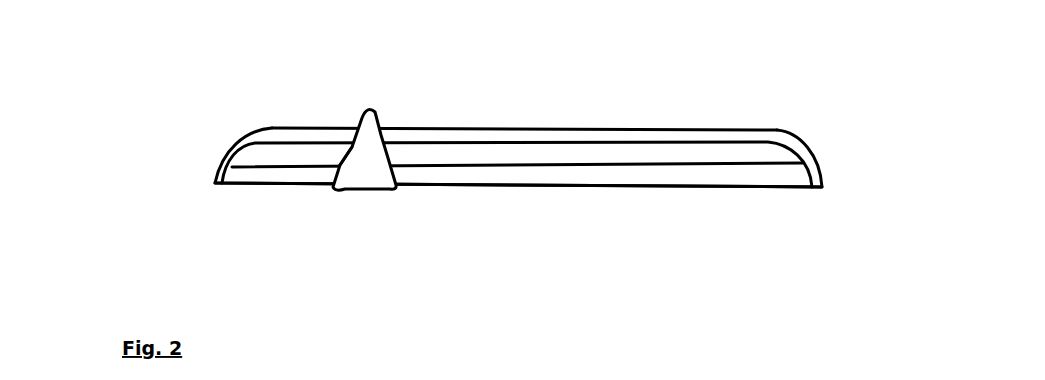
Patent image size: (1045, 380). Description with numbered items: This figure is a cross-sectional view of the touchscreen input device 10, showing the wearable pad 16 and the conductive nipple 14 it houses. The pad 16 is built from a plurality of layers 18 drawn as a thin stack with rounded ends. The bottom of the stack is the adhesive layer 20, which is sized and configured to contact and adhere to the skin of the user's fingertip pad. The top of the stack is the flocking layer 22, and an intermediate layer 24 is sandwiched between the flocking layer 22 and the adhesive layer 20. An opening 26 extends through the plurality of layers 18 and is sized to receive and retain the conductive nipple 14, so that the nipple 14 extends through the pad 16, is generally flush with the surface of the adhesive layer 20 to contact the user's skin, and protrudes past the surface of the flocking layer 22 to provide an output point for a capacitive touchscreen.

The touchscreen input device 10 is at (210, 142).
The conductive nipple 14 is at (362, 110).
The wearable pad 16 is at (476, 124).
The plurality of layers 18 is at (832, 173).
The adhesive layer 20 is at (660, 175).
The flocking layer 22 is at (607, 127).
The intermediate layer 24 is at (565, 153).
The opening 26 is at (331, 156).